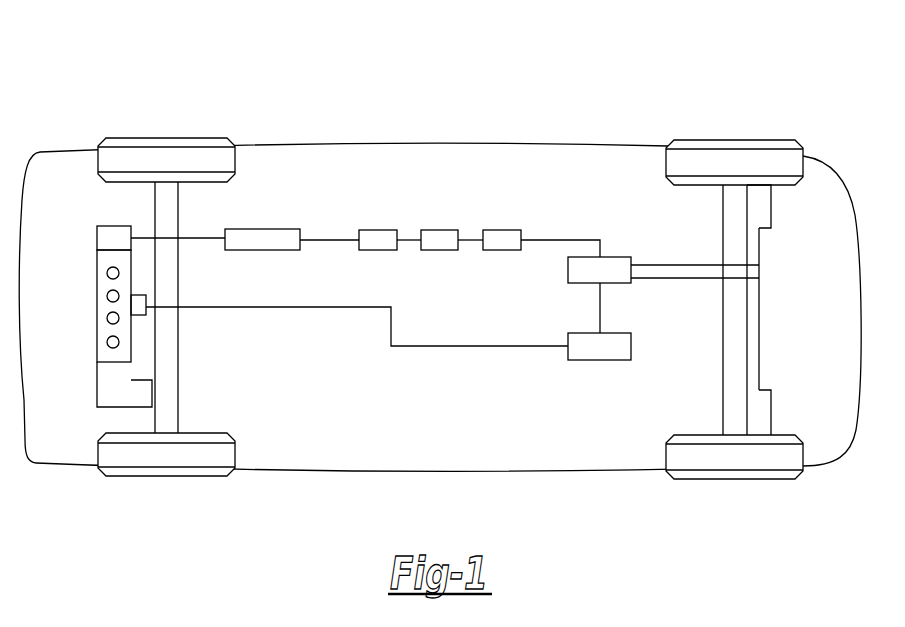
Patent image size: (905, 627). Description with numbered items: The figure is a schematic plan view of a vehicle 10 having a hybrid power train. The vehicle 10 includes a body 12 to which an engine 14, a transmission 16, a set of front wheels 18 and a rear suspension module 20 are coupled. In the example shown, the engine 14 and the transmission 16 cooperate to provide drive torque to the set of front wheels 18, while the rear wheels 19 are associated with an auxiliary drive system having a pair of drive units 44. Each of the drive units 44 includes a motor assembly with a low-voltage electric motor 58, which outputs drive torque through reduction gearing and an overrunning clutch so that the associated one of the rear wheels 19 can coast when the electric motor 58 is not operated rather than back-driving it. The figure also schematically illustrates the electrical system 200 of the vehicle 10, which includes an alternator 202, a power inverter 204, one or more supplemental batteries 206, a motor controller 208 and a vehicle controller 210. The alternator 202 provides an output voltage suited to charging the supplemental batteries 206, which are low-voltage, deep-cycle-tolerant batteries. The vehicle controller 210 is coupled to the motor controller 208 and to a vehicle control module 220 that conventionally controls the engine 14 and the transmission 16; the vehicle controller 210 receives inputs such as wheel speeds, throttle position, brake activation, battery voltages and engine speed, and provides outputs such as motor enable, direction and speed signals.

The vehicle 10 is at (448, 287).
The body 12 is at (434, 145).
The engine 14 is at (100, 278).
The transmission 16 is at (97, 389).
The set of front wheels 18 is at (200, 138).
The rear wheels 19 is at (689, 140).
The rear suspension module 20 is at (790, 407).
The drive units 44 is at (812, 311).
The electric motor 58 is at (763, 196).
The electrical system 200 is at (492, 293).
The alternator 202 is at (104, 239).
The power inverter 204 is at (272, 229).
The supplemental batteries 206 is at (378, 250).
The motor controller 208 is at (616, 257).
The vehicle controller 210 is at (600, 360).
The vehicle control module 220 is at (136, 318).